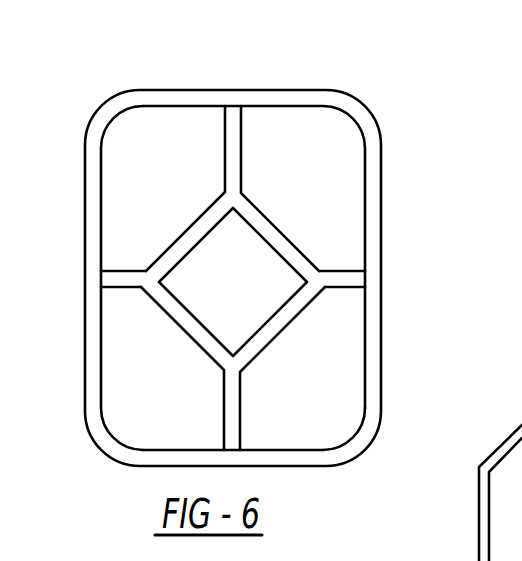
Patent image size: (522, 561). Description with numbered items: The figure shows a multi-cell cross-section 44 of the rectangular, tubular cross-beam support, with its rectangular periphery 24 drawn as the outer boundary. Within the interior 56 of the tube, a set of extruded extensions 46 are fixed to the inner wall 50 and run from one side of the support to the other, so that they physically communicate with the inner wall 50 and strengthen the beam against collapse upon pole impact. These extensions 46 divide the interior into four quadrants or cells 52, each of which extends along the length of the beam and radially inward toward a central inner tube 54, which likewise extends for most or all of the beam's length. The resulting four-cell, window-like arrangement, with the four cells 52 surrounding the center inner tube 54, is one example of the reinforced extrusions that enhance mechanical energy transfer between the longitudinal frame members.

The tube 24 is at (365, 108).
The cross-section 44 is at (155, 173).
The extensions 46 is at (217, 156).
The inner wall 50 is at (337, 440).
The cells 52 is at (155, 197).
The inner tube 54 is at (253, 311).
The interior 56 is at (275, 422).